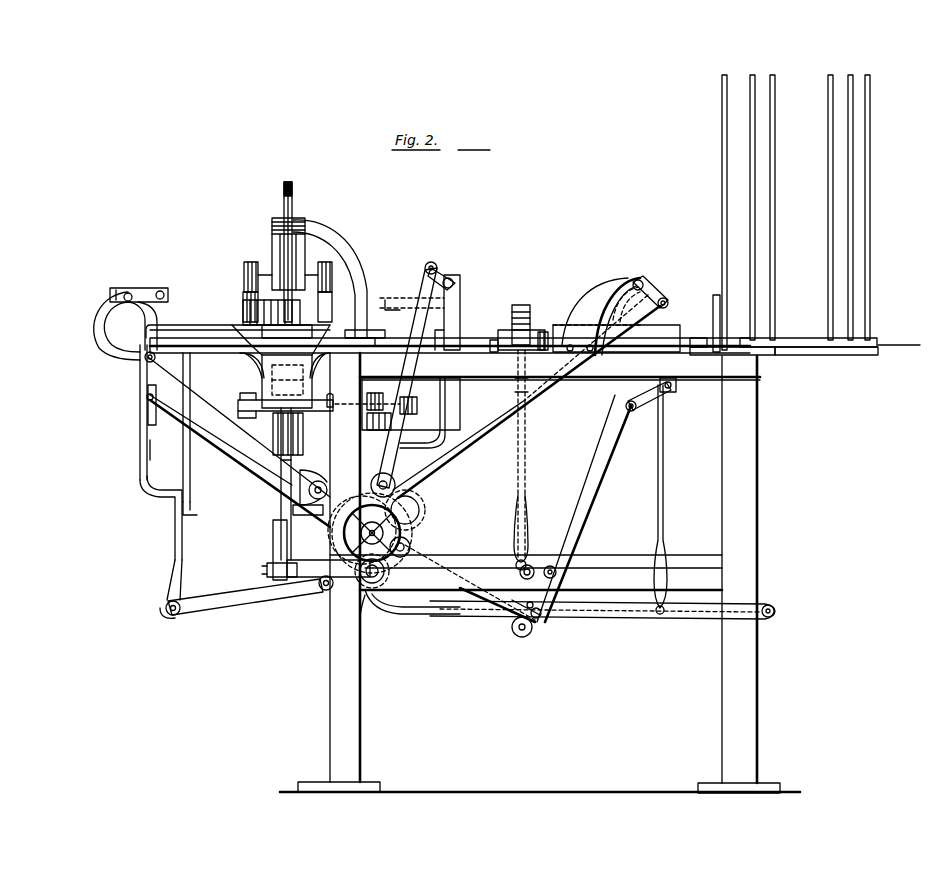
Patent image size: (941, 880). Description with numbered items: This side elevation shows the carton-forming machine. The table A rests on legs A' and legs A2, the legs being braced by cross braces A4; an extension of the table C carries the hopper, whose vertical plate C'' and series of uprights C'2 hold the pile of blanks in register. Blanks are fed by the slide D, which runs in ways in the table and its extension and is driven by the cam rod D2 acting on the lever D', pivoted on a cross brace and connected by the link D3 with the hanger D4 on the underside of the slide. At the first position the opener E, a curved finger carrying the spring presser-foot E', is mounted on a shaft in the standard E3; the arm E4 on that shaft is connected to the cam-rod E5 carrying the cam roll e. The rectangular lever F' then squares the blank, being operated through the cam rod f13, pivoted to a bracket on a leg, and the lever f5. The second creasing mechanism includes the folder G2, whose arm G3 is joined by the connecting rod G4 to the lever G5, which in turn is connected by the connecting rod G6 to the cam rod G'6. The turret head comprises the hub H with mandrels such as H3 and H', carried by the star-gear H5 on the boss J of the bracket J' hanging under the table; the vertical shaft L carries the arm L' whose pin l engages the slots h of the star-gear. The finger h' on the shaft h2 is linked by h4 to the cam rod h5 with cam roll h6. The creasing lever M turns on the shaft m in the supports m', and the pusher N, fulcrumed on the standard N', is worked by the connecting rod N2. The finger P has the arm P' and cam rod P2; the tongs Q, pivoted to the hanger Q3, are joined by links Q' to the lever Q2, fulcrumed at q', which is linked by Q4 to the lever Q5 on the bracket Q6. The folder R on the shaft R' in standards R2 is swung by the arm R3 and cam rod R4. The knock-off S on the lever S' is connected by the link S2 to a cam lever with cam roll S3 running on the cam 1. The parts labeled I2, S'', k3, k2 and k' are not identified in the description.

The table A is at (455, 359).
The legs A2 is at (331, 623).
The legs A' is at (739, 574).
The cross braces A4 is at (526, 488).
The mandrel H3 is at (178, 328).
The folder R is at (133, 282).
The shaft R' is at (137, 280).
The standards R2 is at (97, 325).
The arm R3 is at (150, 315).
The cam rod R4 is at (145, 358).
The finger P is at (117, 412).
The tongs Q is at (124, 446).
The hanger Q3 is at (163, 410).
The links Q' is at (171, 427).
The lever Q2 is at (190, 455).
The fulcrum q' is at (197, 502).
The link Q4 is at (180, 560).
The lever Q5 is at (270, 598).
The bracket Q6 is at (325, 593).
The arm P' is at (238, 427).
The cam rod P2 is at (262, 462).
The lever S' is at (281, 457).
The hub H is at (281, 351).
The star-gear H5 is at (285, 401).
The arm L' is at (295, 434).
The pin l is at (328, 394).
The vertical shaft L is at (379, 400).
The block I2 is at (415, 398).
The bracket J' is at (334, 405).
The boss J is at (313, 487).
The slide rod S'' is at (267, 479).
The link S2 is at (275, 547).
The knock-off S is at (308, 527).
The cam roll S3 is at (372, 610).
The cam roll e is at (420, 509).
The cam roll h6 is at (395, 482).
The cam 1 is at (412, 515).
The cam rod h5 is at (410, 290).
The link h4 is at (447, 278).
The shaft h2 is at (452, 280).
The slots h is at (352, 340).
The finger h' is at (410, 291).
The mandrel H' is at (412, 310).
The connecting rod N2 is at (292, 188).
The lever M is at (272, 232).
The pusher N is at (330, 268).
The standard N' is at (357, 284).
The shaft m is at (285, 266).
The supports m' is at (304, 263).
The column k3 is at (335, 290).
The block k2 is at (243, 310).
The plate k' is at (365, 306).
The arm E4 is at (660, 292).
The standard E3 is at (605, 295).
The spring presser-foot E' is at (595, 311).
The opener E is at (626, 304).
The cam-rod E5 is at (552, 405).
The lever F' is at (616, 330).
The connecting rod G4 is at (522, 305).
The arm G3 is at (508, 330).
The folder G2 is at (541, 332).
The lever G5 is at (515, 402).
The connecting rod G6 is at (527, 475).
The cam rod G'6 is at (576, 508).
The link D3 is at (630, 400).
The hanger D4 is at (675, 392).
The lever D' is at (588, 514).
The cam rod D2 is at (492, 612).
The lever f5 is at (664, 470).
The cam rod f13 is at (630, 617).
The uprights C'2 is at (810, 207).
The vertical plate C'' is at (706, 213).
The extension of the table C is at (784, 338).
The slide D is at (899, 356).